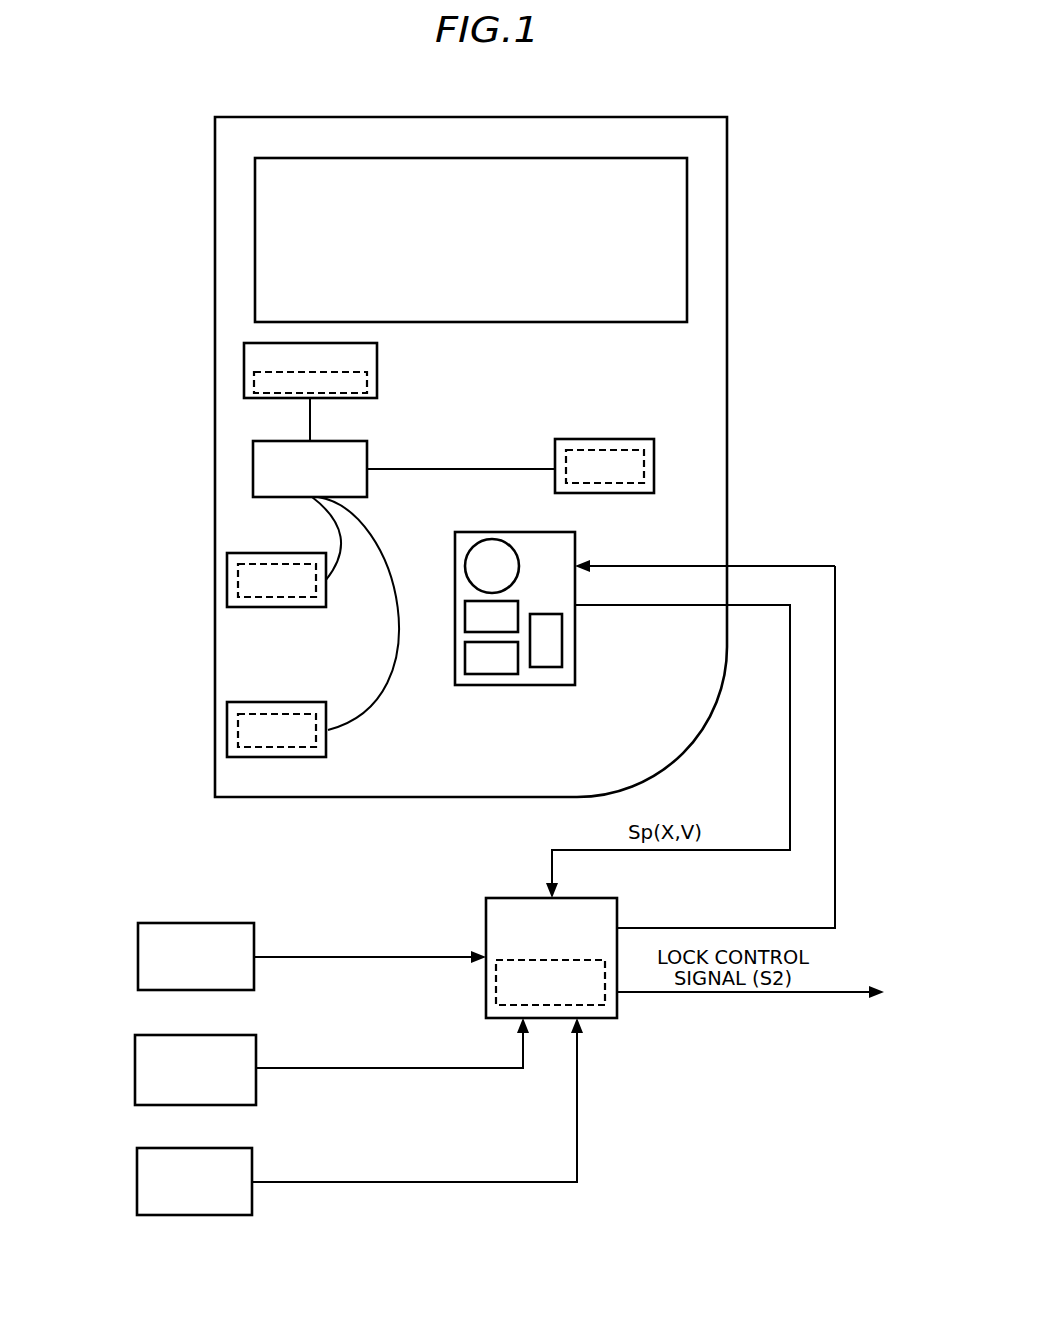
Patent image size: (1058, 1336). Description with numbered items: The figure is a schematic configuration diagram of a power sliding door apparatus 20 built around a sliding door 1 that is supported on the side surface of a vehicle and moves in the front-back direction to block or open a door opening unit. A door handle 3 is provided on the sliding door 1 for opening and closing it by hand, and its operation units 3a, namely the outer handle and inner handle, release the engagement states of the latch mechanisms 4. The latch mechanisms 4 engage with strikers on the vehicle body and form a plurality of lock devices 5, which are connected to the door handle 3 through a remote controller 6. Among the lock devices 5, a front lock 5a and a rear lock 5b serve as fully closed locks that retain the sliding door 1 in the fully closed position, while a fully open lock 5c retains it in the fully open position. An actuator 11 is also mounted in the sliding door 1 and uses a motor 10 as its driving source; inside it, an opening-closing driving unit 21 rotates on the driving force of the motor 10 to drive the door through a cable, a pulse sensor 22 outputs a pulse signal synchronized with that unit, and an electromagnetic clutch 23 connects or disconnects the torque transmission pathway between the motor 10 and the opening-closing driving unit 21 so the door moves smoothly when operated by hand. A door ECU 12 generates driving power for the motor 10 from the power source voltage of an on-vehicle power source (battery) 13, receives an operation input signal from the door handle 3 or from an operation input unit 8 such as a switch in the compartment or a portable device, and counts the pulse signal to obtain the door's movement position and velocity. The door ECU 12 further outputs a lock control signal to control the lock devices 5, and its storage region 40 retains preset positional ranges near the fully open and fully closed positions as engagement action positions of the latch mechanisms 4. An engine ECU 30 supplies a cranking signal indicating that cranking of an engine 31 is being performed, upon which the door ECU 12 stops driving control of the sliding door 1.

The power sliding door apparatus 20 is at (191, 103).
The sliding door 1 is at (473, 117).
The door handle 3 is at (378, 352).
The operation units 3a is at (368, 383).
The remote controller 6 is at (352, 441).
The latch mechanisms 4 is at (578, 450).
The lock devices 5 is at (454, 576).
The front lock 5a is at (305, 607).
The rear lock 5b is at (638, 439).
The fully open lock 5c is at (327, 745).
The actuator 11 is at (517, 532).
The motor 10 is at (465, 566).
The electromagnetic clutch 23 is at (465, 617).
The opening-closing driving unit 21 is at (465, 657).
The pulse sensor 22 is at (545, 667).
The door ECU 12 is at (510, 898).
The storage region 40 is at (495, 990).
The operation input unit 8 is at (137, 957).
The on-vehicle power source (battery) 13 is at (135, 1067).
The engine ECU 30 is at (316, 1116).
The engine 31 is at (137, 1182).